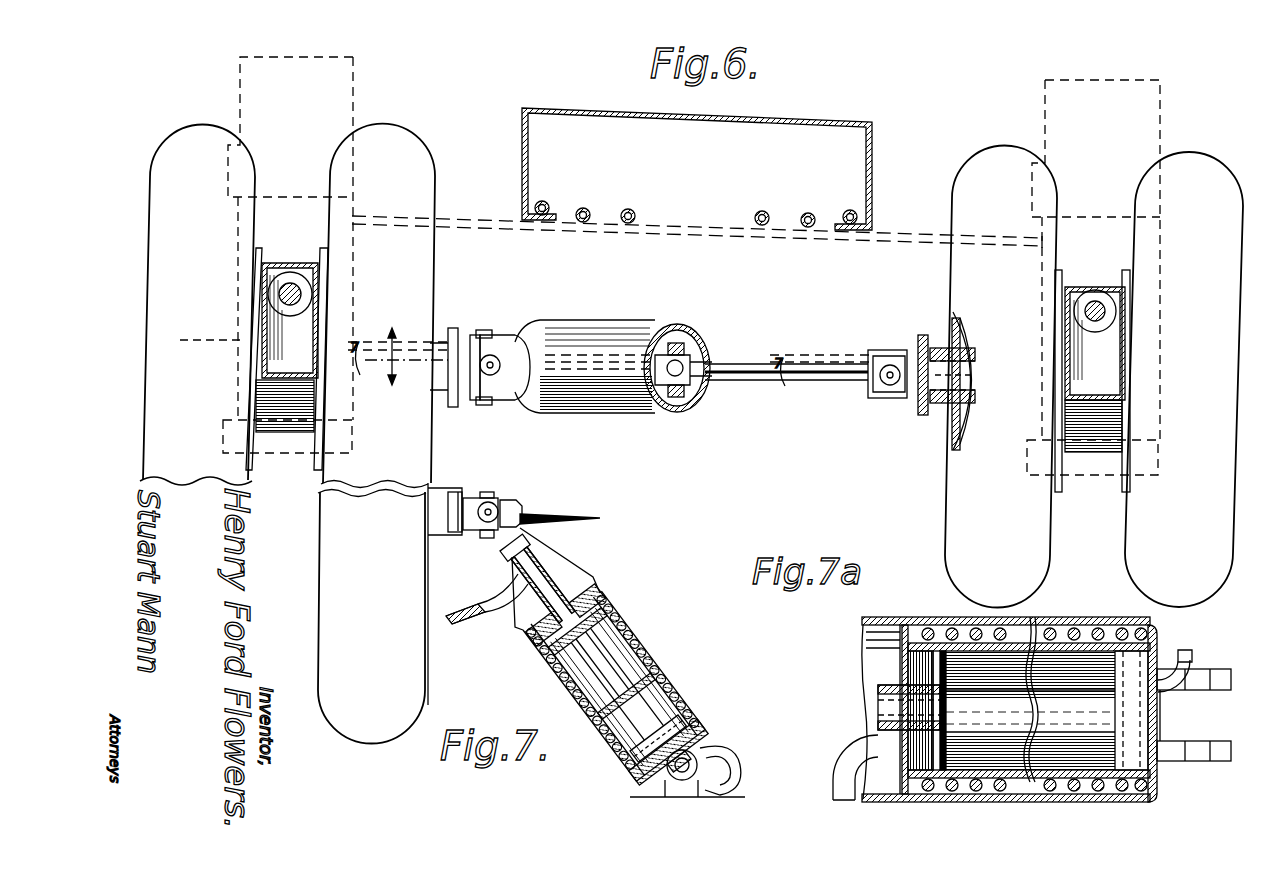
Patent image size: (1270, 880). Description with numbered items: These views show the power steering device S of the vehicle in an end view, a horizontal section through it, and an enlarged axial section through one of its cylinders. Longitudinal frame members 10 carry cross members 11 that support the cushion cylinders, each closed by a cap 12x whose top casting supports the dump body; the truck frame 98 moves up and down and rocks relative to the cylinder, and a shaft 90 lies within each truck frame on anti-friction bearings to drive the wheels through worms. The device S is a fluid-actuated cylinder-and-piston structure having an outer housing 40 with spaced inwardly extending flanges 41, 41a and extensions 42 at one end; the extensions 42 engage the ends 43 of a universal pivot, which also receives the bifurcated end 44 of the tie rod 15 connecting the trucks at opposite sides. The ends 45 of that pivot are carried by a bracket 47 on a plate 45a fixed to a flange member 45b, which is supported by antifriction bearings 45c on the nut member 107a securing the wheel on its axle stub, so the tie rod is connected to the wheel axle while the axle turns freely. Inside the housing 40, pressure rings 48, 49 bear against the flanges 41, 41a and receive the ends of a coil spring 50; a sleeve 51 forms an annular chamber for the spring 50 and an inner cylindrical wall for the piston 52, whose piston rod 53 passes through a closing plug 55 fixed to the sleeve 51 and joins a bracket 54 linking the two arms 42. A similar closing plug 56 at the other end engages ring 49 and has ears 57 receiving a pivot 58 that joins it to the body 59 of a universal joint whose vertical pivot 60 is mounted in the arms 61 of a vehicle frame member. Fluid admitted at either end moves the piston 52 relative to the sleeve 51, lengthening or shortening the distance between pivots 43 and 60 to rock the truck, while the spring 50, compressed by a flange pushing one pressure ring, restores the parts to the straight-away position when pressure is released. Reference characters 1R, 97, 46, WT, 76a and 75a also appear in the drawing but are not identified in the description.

In FIG. 6, the longitudinal frame members 10 is at (818, 122).
In FIG. 6, the cross members 11 is at (895, 242).
In FIG. 6, the cap 12x is at (356, 96).
In FIG. 6, the axle line 1R is at (1178, 384).
In FIG. 6, the shaft 90 is at (298, 292).
In FIG. 6, the truck frame 98 is at (312, 318).
In FIG. 6, the brake drum 97 is at (275, 401).
In FIG. 6, the ends of the universal pivot 45 is at (456, 408).
In FIG. 7, the ends of the universal pivot 45 is at (492, 490).
In FIG. 6, the plate 45a is at (459, 328).
In FIG. 6, the flange member 45b is at (448, 345).
In FIG. 6, the antifriction bearings 45c is at (976, 378).
In FIG. 6, the bracket 47 is at (466, 342).
In FIG. 7, the bracket 47 is at (450, 500).
In FIG. 6, the ends of a universal pivot 43 is at (494, 338).
In FIG. 7, the ends of a universal pivot 43 is at (508, 508).
In FIG. 6, the pivot pin 46 is at (492, 374).
In FIG. 7, the pivot pin 46 is at (484, 540).
In FIG. 6, the bifurcated end 44 is at (540, 345).
In FIG. 7, the bifurcated end 44 is at (530, 506).
In FIG. 6, the power steering device S is at (605, 326).
In FIG. 7, the power steering device S is at (575, 690).
In FIG. 7A, the power steering device S is at (1080, 620).
In FIG. 6, the pressure ring 49 is at (672, 328).
In FIG. 7, the pressure ring 49 is at (700, 730).
In FIG. 7A, the pressure ring 49 is at (1130, 622).
In FIG. 6, the closing plug 56 is at (683, 343).
In FIG. 7, the closing plug 56 is at (680, 715).
In FIG. 7A, the closing plug 56 is at (1130, 700).
In FIG. 6, the arms 61 is at (700, 352).
In FIG. 7, the arms 61 is at (660, 781).
In FIG. 6, the ears 57 is at (712, 368).
In FIG. 7, the ears 57 is at (672, 755).
In FIG. 7A, the ears 57 is at (1225, 670).
In FIG. 6, the body of a universal joint 59 is at (705, 382).
In FIG. 7, the body of a universal joint 59 is at (698, 785).
In FIG. 6, the pivot 58 is at (672, 378).
In FIG. 7, the pivot 58 is at (700, 760).
In FIG. 6, the vertical pivot 60 is at (684, 398).
In FIG. 7, the vertical pivot 60 is at (700, 768).
In FIG. 6, the tie rod 15 is at (830, 383).
In FIG. 7, the tie rod 15 is at (575, 516).
In FIG. 6, the nut member 107a is at (958, 340).
In FIG. 6, the wheel tread WT is at (300, 493).
In FIG. 7, the extensions 42 is at (560, 570).
In FIG. 7A, the extensions 42 is at (870, 672).
In FIG. 7, the bracket 54 is at (508, 556).
In FIG. 7, the inwardly extending flange 41 is at (590, 590).
In FIG. 7A, the inwardly extending flange 41 is at (903, 625).
In FIG. 7, the pressure ring 48 is at (605, 600).
In FIG. 7A, the pressure ring 48 is at (920, 625).
In FIG. 7, the piston rod 53 is at (487, 599).
In FIG. 7, the outer housing structure 40 is at (615, 625).
In FIG. 7A, the outer housing structure 40 is at (880, 618).
In FIG. 7, the piston 52 is at (618, 645).
In FIG. 7, the coil spring 50 is at (560, 672).
In FIG. 7A, the coil spring 50 is at (1065, 622).
In FIG. 7, the closing plug 55 is at (547, 632).
In FIG. 7A, the closing plug 55 is at (962, 706).
In FIG. 7, the sleeve 51 is at (655, 680).
In FIG. 7A, the sleeve 51 is at (978, 770).
In FIG. 7, the pipe end 76a is at (452, 635).
In FIG. 7, the inwardly extending flange 41a is at (738, 745).
In FIG. 7A, the inwardly extending flange 41a is at (1165, 630).
In FIG. 7, the pipe 75a is at (742, 762).
In FIG. 7A, the pipe 75a is at (1195, 660).